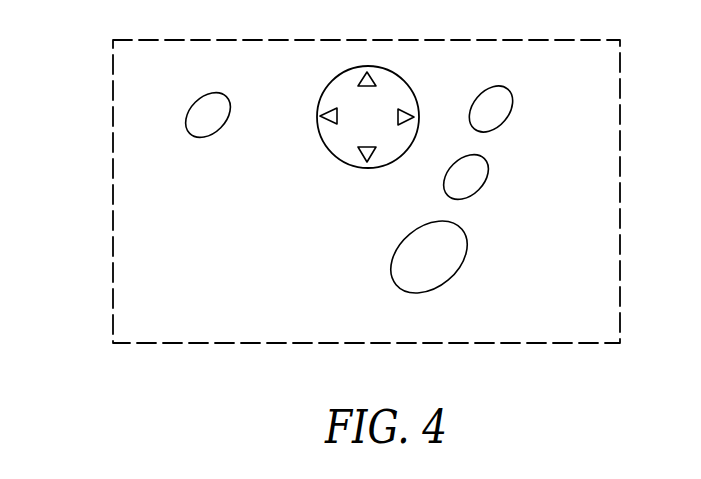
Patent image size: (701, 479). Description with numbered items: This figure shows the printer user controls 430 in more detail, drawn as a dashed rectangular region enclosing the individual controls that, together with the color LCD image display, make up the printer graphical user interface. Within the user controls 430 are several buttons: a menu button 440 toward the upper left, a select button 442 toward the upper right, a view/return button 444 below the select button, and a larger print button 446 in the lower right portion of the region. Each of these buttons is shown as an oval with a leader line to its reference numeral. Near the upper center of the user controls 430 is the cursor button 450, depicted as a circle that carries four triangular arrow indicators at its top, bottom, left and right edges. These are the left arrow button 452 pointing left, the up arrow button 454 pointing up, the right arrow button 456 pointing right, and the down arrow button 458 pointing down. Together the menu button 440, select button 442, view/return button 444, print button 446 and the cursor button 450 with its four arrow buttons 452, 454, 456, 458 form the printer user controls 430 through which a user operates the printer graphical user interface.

The printer user controls 430 is at (113, 192).
The menu button 440 is at (200, 125).
The select button 442 is at (497, 102).
The view/return button 444 is at (468, 177).
The print button 446 is at (442, 262).
The cursor button 450 is at (401, 68).
The left arrow button 452 is at (321, 115).
The up arrow button 454 is at (361, 82).
The right arrow button 456 is at (406, 118).
The down arrow button 458 is at (367, 154).